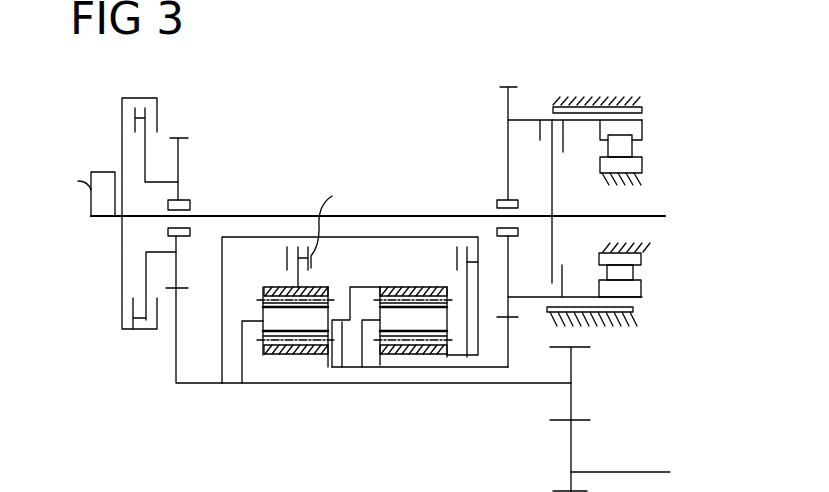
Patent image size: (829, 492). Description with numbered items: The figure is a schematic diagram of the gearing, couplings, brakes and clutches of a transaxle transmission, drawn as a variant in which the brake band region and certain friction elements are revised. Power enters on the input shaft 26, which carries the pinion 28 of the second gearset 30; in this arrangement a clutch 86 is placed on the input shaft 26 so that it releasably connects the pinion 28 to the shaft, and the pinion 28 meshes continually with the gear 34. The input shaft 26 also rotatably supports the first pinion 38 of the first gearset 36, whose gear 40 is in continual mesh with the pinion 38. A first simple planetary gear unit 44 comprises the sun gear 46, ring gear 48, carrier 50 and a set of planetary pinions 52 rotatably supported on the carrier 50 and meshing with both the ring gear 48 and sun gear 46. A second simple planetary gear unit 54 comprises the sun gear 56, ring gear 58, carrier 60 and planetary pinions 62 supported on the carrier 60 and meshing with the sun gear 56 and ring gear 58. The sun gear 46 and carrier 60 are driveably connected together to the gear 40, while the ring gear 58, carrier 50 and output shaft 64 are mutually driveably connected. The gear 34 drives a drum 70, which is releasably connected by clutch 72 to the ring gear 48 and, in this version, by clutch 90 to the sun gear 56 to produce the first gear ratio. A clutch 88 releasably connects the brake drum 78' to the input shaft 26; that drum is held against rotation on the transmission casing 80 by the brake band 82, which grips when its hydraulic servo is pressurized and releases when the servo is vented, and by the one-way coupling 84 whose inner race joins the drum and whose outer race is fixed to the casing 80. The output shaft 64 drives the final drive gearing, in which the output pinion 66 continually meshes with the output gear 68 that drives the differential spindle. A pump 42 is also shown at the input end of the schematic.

The input shaft 26 is at (578, 219).
The pinion 28 is at (187, 157).
The second gearset 30 is at (192, 138).
The gear 34 is at (175, 351).
The first gearset 36 is at (495, 107).
The first pinion 38 is at (505, 157).
The gear 40 is at (512, 352).
The pump 42 is at (101, 172).
The first simple planetary gear unit 44 is at (240, 260).
The sun gear 46 is at (268, 353).
The ring gear 48 is at (310, 282).
The carrier 50 is at (343, 367).
The planetary pinions 52 is at (264, 300).
The second simple planetary gear unit 54 is at (399, 266).
The sun gear 56 is at (405, 357).
The ring gear 58 is at (404, 282).
The carrier 60 is at (353, 340).
The planetary pinions 62 is at (431, 316).
The output shaft 64 is at (479, 384).
The output pinion 66 is at (575, 403).
The output gear 68 is at (575, 458).
The drum 70 is at (403, 240).
The clutch 72 is at (337, 225).
The brake drum 78' is at (575, 106).
The transmission casing 80 is at (612, 97).
The brake band 82 is at (650, 102).
The coupling 84 is at (641, 148).
The clutch 86 is at (124, 110).
The clutch 88 is at (550, 138).
The clutch 90 is at (478, 262).